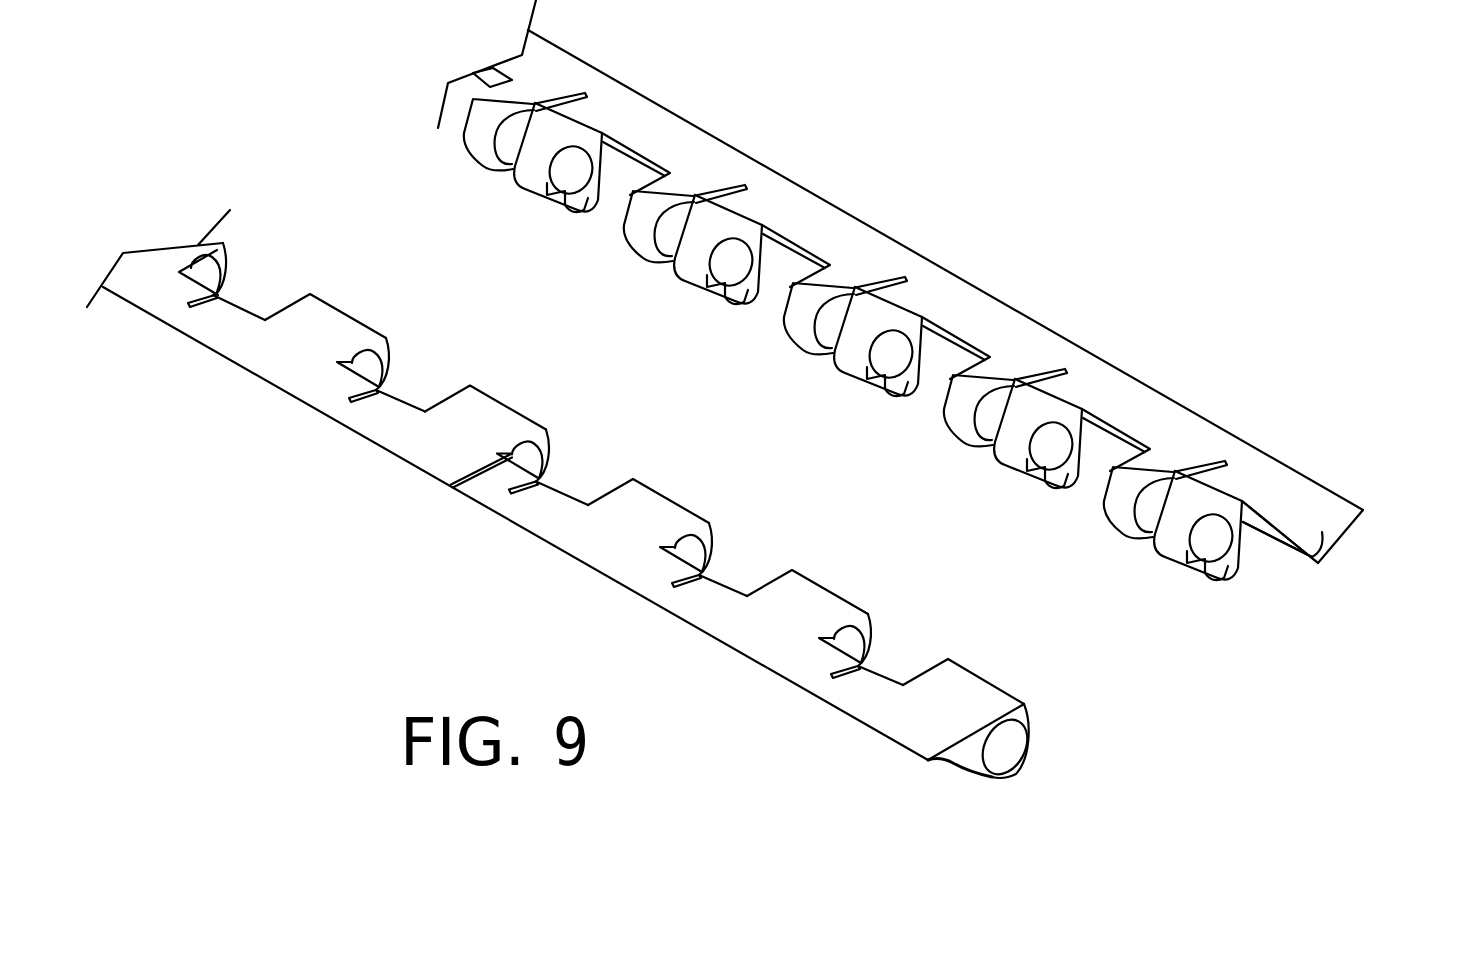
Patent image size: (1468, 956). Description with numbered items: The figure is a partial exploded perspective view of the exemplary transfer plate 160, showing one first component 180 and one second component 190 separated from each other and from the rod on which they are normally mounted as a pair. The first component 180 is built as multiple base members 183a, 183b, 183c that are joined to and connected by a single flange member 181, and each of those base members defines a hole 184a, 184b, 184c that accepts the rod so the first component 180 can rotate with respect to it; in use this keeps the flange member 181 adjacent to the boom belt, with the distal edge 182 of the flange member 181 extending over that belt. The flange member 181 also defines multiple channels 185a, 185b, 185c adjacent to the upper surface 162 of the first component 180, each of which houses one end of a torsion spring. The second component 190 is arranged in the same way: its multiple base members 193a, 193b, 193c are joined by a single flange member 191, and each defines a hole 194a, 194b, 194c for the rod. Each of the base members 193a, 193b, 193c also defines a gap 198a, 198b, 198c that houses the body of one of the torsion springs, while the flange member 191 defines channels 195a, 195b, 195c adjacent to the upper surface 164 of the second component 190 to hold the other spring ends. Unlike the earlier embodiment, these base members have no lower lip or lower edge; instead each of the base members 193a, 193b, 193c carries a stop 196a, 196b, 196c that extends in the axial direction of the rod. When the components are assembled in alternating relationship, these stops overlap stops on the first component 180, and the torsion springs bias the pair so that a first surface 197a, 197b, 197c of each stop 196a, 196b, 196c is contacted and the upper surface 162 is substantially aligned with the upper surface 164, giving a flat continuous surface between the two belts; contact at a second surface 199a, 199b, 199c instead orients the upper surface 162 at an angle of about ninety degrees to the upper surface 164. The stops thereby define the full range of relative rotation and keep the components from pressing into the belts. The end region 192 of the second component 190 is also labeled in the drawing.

The transfer plate 160 is at (1198, 180).
The upper surface 162 is at (785, 638).
The upper surface 164 is at (1037, 351).
The first component 180 is at (285, 397).
The flange member 181 is at (953, 763).
The distal edge 182 is at (862, 733).
The base member 183a is at (921, 670).
The base member 183b is at (762, 578).
The base member 183c is at (607, 488).
The hole 184a is at (1013, 776).
The hole 184b is at (868, 642).
The hole 184c is at (710, 550).
The channel 185a is at (835, 676).
The channel 185b is at (675, 575).
The channel 185c is at (510, 488).
The second component 190 is at (665, 106).
The flange member 191 is at (1335, 548).
The end portion 192 is at (1370, 497).
The base member 193a is at (1215, 590).
The base member 193b is at (1055, 498).
The base member 193c is at (895, 406).
The hole 194a is at (1330, 495).
The hole 194b is at (1105, 392).
The hole 194c is at (940, 370).
The channel 195a is at (1130, 478).
The channel 195b is at (1040, 385).
The channel 195c is at (862, 330).
The stop 196a is at (1340, 495).
The stop 196b is at (1145, 480).
The stop 196c is at (990, 372).
The first surface 197a is at (1235, 482).
The first surface 197b is at (1058, 440).
The first surface 197c is at (880, 330).
The gap 198a is at (1200, 478).
The gap 198b is at (1055, 362).
The gap 198c is at (886, 245).
The second surface 199a is at (1318, 495).
The second surface 199b is at (1130, 460).
The second surface 199c is at (962, 355).